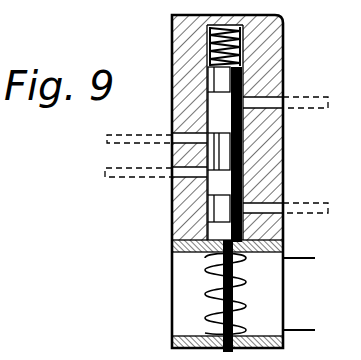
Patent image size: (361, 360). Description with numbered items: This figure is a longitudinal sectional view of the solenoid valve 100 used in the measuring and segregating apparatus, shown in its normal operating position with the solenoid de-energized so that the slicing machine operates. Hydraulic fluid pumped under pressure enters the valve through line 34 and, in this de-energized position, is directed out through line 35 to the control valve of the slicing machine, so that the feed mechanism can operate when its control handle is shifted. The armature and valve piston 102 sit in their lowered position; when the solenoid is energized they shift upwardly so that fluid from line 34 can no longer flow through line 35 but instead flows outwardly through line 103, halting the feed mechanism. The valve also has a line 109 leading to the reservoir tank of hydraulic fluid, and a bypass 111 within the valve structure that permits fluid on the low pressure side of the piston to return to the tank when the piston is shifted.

The solenoid valve 100 is at (285, 32).
The valve piston 102 is at (255, 80).
The line 103 is at (312, 107).
The line 109 is at (310, 213).
The bypass 111 is at (285, 161).
The line 34 is at (147, 120).
The line 35 is at (124, 178).